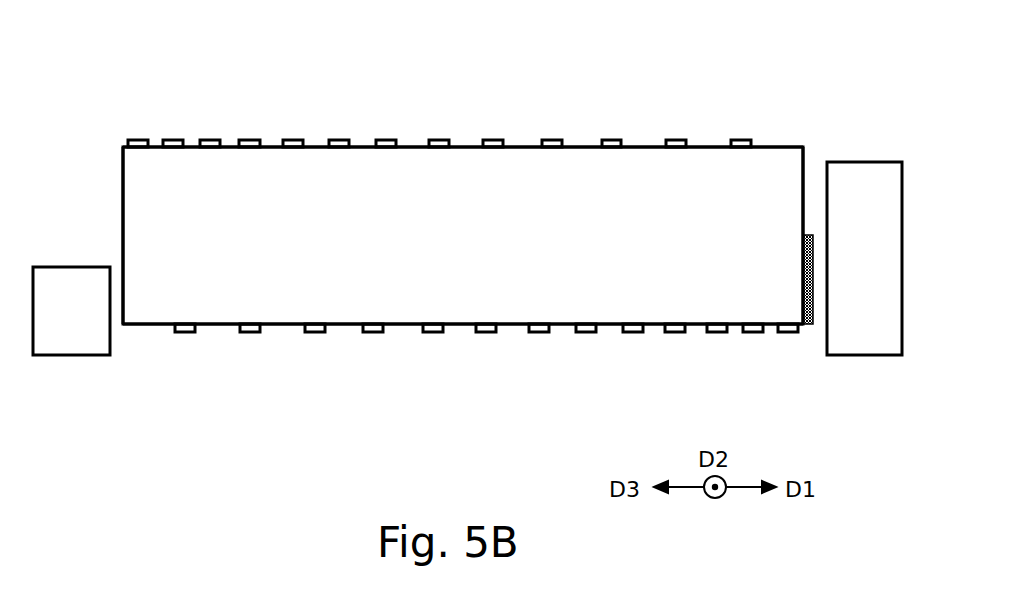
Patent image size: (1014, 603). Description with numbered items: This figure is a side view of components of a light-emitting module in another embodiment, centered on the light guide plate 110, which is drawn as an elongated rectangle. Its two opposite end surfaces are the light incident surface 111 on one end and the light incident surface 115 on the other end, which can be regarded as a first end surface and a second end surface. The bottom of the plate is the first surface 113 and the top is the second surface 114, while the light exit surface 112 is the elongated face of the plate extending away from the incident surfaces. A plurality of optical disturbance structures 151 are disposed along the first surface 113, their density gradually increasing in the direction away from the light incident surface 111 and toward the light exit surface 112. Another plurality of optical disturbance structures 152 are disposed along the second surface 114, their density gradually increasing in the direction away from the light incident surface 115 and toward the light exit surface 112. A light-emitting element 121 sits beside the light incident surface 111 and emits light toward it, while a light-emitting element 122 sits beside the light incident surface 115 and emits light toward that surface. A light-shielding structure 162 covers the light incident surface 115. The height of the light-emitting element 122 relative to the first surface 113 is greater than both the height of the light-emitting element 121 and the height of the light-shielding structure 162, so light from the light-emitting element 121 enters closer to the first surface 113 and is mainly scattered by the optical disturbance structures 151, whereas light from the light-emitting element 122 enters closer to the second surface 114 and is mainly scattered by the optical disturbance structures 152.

The light guide plate 110 is at (812, 80).
The light incident surface 111 is at (122, 163).
The light exit surface 112 is at (463, 235).
The first surface 113 is at (400, 332).
The second surface 114 is at (317, 145).
The light incident surface 115 is at (804, 158).
The light-emitting element 121 is at (70, 266).
The light-emitting element 122 is at (862, 178).
The optical disturbance structures 151 is at (250, 333).
The optical disturbance structures 152 is at (677, 140).
The light-shielding structure 162 is at (808, 325).